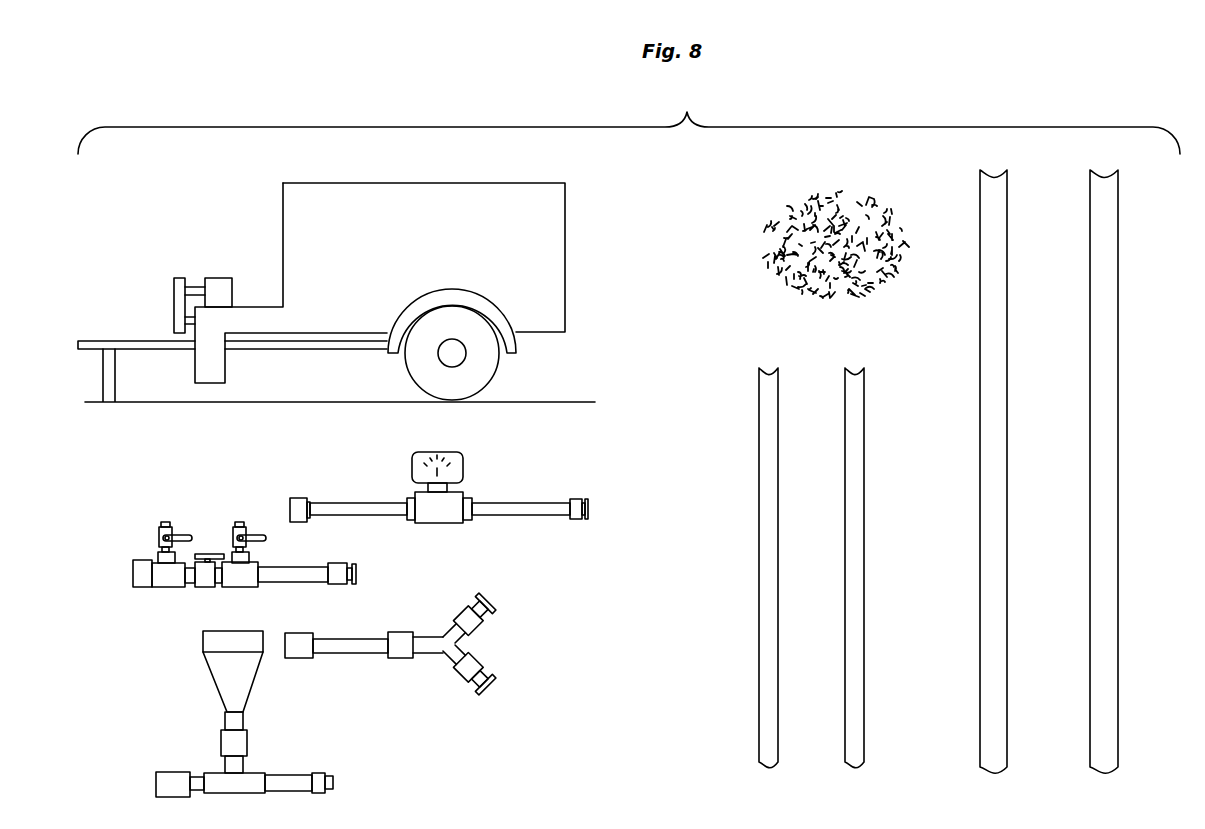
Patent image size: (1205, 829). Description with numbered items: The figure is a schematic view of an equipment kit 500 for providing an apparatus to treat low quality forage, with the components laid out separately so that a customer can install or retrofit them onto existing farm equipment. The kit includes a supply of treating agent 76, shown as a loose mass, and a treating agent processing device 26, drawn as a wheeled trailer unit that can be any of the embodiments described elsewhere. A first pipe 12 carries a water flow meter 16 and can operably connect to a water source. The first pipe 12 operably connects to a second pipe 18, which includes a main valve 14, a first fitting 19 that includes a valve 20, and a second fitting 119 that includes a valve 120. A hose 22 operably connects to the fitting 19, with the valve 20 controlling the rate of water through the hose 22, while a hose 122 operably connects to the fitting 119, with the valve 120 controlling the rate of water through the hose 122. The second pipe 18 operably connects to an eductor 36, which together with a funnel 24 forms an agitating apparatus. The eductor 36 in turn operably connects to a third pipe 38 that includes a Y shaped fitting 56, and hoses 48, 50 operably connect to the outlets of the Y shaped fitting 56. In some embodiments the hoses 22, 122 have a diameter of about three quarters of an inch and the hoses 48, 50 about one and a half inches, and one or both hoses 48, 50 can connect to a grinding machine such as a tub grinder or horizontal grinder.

The kit 500 is at (629, 120).
The treating agent processing device 26 is at (418, 183).
The second fitting 119 is at (171, 584).
The main valve 14 is at (208, 578).
The first fitting 19 is at (247, 584).
The second pipe 18 is at (308, 577).
The valve 120 is at (160, 537).
The valve 20 is at (237, 537).
The first pipe 12 is at (545, 498).
The water flow meter 16 is at (460, 470).
The funnel 24 is at (215, 668).
The eductor 36 is at (252, 775).
The third pipe 38 is at (282, 782).
The Y shaped fitting 56 is at (450, 633).
The treating agent 76 is at (848, 200).
The hose 22 is at (765, 427).
The hose 122 is at (858, 438).
The hose 48 is at (987, 303).
The hose 50 is at (1107, 288).